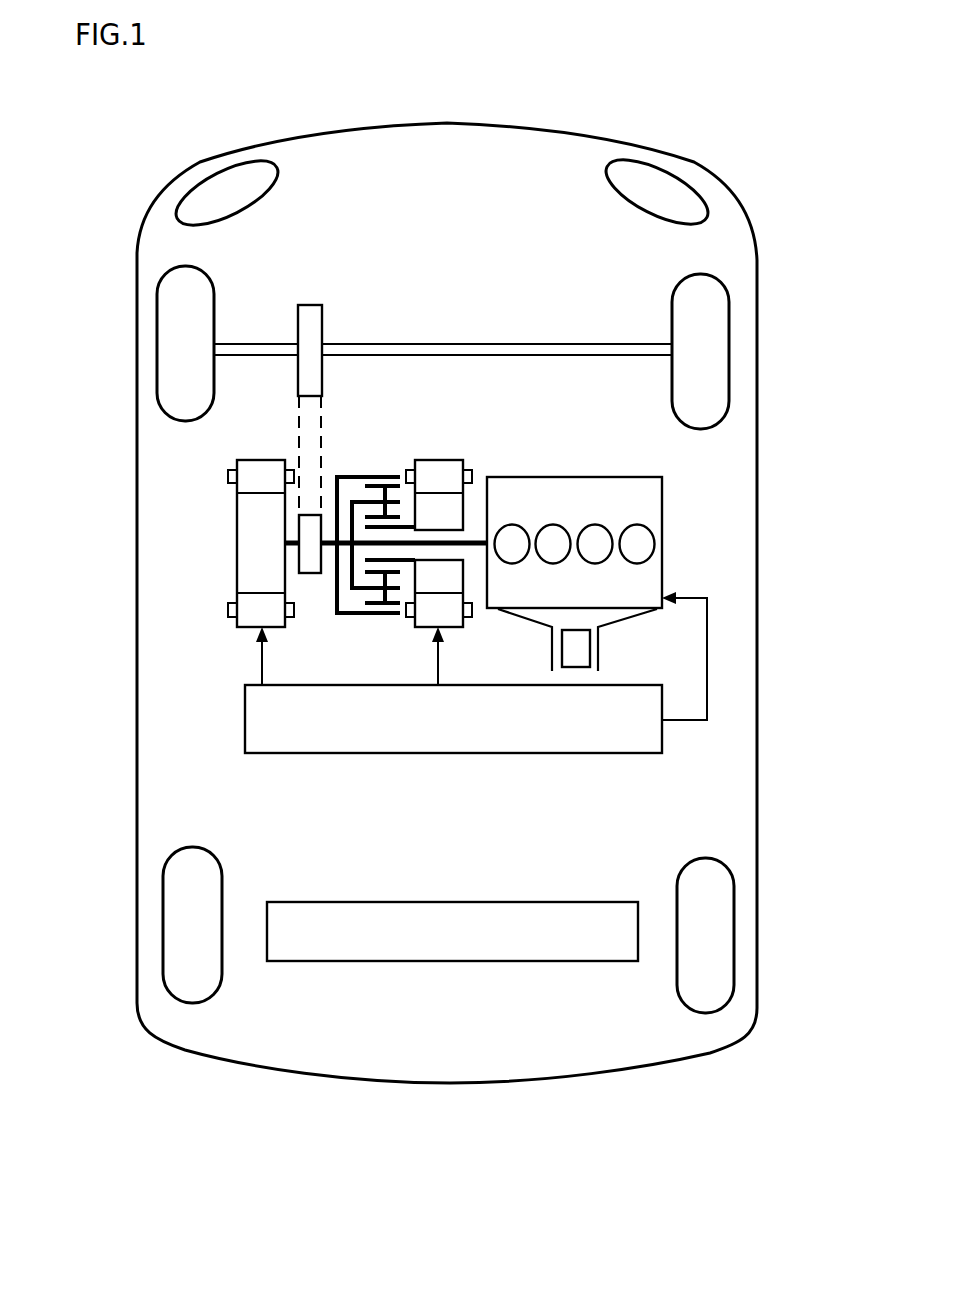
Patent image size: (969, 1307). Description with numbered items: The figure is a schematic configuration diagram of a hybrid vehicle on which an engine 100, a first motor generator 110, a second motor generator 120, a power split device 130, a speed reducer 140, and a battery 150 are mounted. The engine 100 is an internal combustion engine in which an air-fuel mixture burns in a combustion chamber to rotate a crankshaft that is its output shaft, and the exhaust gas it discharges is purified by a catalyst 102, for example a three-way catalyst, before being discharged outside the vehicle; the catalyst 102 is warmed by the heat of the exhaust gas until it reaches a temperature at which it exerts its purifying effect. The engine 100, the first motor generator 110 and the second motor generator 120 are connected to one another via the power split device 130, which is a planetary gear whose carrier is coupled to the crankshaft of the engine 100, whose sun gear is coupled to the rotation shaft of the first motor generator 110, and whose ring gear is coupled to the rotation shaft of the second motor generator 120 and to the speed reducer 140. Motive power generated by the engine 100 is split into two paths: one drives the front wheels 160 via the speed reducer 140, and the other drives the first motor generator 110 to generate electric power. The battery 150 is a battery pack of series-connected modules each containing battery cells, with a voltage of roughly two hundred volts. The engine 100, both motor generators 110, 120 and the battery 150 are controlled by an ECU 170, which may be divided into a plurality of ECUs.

The engine 100 is at (523, 477).
The catalyst 102 is at (592, 650).
The first motor generator 110 is at (440, 460).
The second motor generator 120 is at (236, 537).
The power split device 130 is at (372, 477).
The speed reducer 140 is at (305, 291).
The battery 150 is at (420, 962).
The front wheels 160 is at (157, 353).
The ECU 170 is at (245, 715).